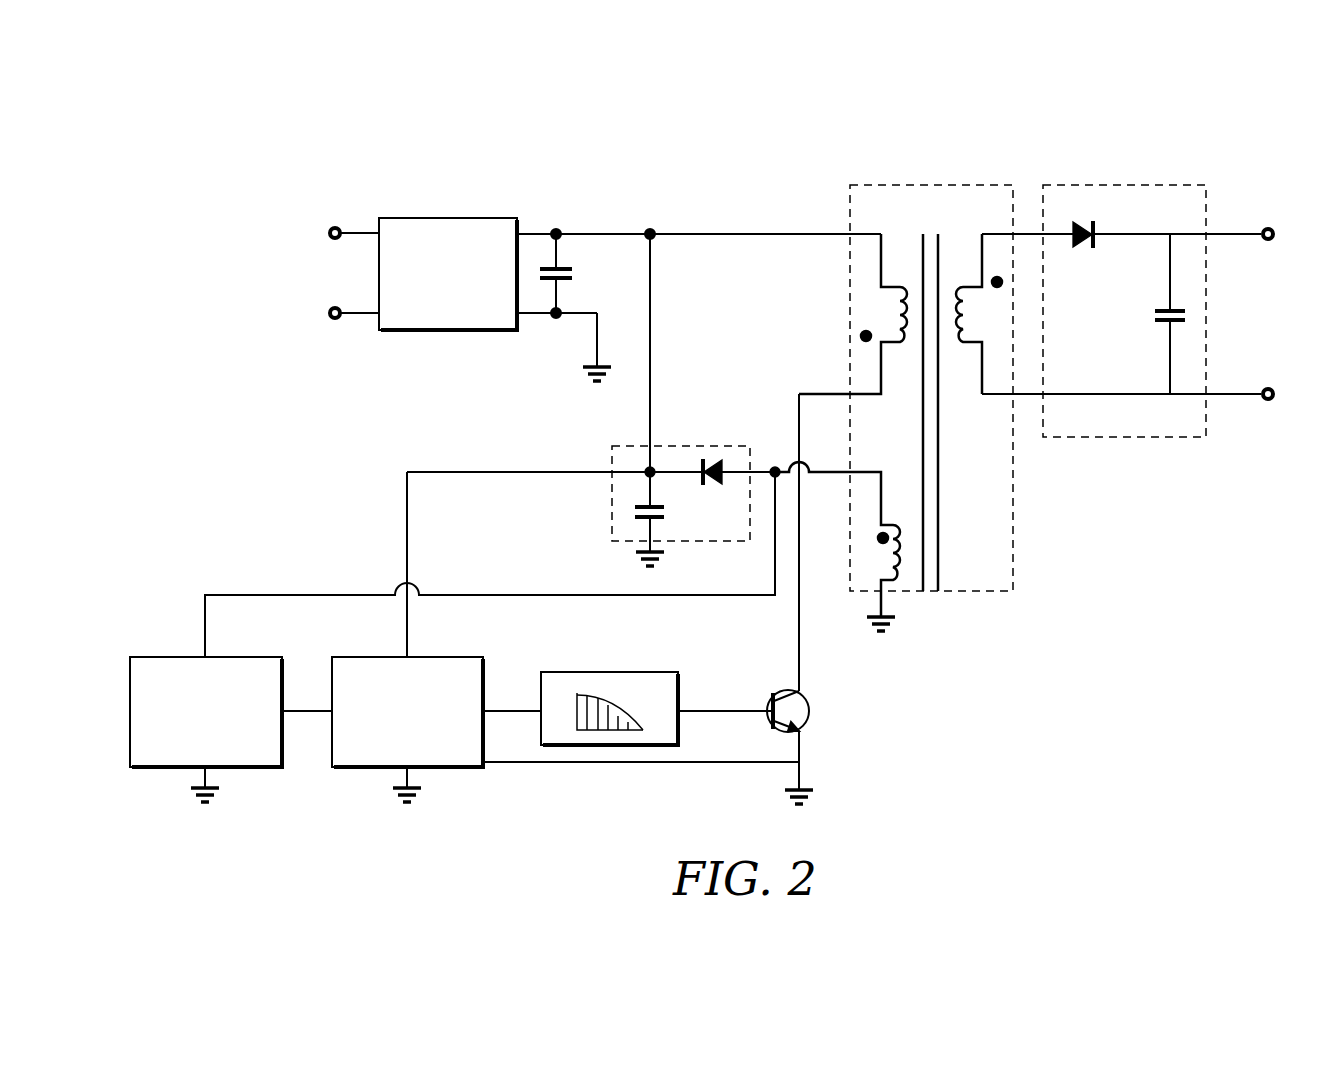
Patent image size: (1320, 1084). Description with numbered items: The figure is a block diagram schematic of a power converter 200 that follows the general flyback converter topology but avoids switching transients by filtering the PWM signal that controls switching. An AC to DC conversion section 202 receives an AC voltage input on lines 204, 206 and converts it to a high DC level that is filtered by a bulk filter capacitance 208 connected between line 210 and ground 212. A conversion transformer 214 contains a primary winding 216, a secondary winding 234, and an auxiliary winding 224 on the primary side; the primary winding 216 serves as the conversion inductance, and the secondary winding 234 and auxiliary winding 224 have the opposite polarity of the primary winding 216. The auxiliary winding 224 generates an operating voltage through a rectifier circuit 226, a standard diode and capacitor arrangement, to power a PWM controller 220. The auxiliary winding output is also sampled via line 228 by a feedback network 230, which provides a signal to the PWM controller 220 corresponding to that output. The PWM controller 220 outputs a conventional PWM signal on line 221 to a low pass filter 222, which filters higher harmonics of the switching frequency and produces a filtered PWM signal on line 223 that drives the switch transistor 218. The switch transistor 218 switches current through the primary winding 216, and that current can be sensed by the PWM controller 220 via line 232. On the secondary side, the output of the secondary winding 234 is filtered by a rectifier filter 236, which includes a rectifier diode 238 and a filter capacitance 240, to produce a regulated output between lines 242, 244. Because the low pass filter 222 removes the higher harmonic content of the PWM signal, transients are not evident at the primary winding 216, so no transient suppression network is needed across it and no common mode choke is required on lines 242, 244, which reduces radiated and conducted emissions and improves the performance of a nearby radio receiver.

The power converter 200 is at (1087, 739).
The AC to DC conversion section 202 is at (500, 218).
The AC input line 204 is at (358, 230).
The AC input line 206 is at (360, 316).
The bulk filter capacitance 208 is at (566, 270).
The line 210 is at (612, 230).
The ground 212 is at (538, 318).
The conversion transformer 214 is at (932, 184).
The primary winding 216 is at (890, 288).
The switch transistor 218 is at (812, 711).
The PWM controller 220 is at (348, 656).
The line 221 is at (511, 708).
The low pass filter 222 is at (614, 670).
The line 223 is at (727, 708).
The auxiliary winding 224 is at (880, 552).
The rectifier circuit 226 is at (688, 444).
The line 228 is at (299, 592).
The feedback network 230 is at (146, 656).
The line 232 is at (640, 764).
The secondary winding 234 is at (993, 234).
The rectifier filter 236 is at (1124, 184).
The rectifier diode 238 is at (1084, 250).
The filter capacitance 240 is at (1165, 308).
The output line 242 is at (1249, 230).
The output line 244 is at (1250, 398).